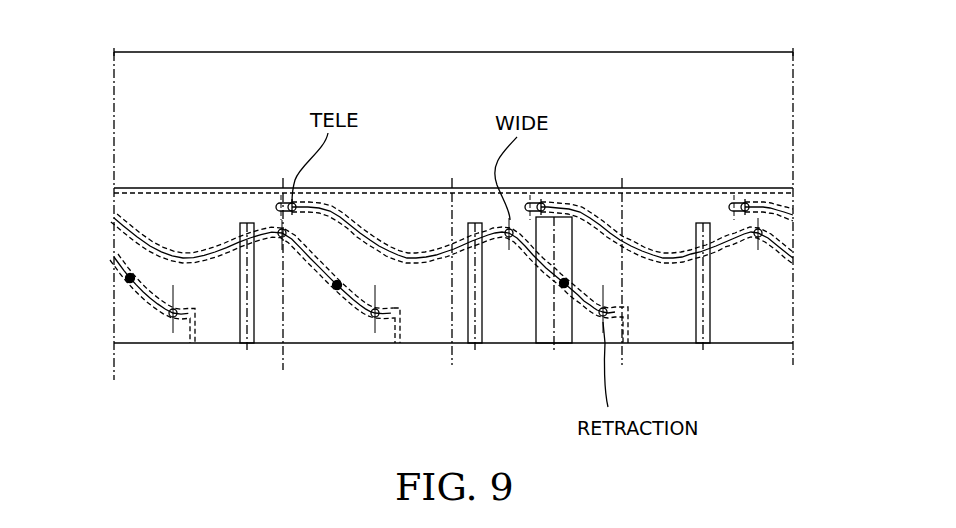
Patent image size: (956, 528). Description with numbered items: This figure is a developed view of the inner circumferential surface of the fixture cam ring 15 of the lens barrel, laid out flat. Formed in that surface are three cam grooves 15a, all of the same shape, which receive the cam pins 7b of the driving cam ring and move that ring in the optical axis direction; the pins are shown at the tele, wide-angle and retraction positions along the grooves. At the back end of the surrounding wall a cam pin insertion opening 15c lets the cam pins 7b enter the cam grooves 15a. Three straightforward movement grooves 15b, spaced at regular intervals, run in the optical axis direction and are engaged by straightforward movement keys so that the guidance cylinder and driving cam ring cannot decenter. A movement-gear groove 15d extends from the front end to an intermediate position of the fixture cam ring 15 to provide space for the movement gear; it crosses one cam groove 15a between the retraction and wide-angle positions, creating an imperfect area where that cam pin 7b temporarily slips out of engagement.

The fixture cam ring 15 is at (755, 147).
The cam groove 15a is at (343, 302).
The straightforward movement groove 15b is at (245, 343).
The cam pin insertion opening 15c is at (393, 322).
The movement-gear groove 15d is at (552, 275).
The cam pin 7b is at (128, 283).